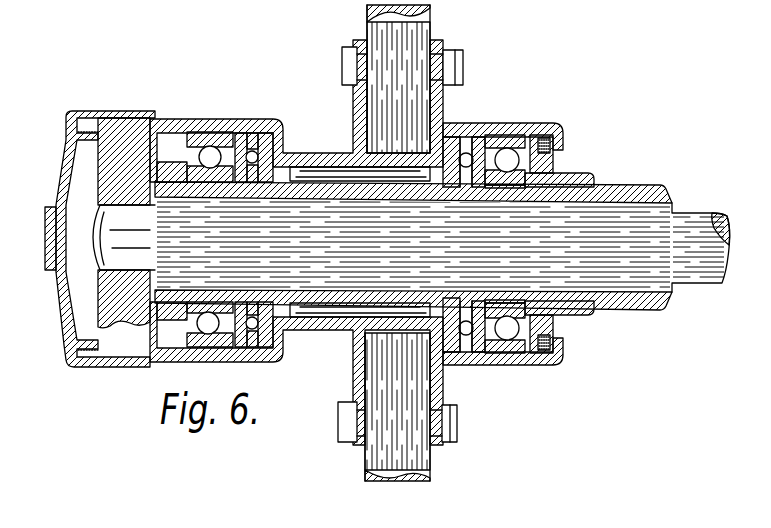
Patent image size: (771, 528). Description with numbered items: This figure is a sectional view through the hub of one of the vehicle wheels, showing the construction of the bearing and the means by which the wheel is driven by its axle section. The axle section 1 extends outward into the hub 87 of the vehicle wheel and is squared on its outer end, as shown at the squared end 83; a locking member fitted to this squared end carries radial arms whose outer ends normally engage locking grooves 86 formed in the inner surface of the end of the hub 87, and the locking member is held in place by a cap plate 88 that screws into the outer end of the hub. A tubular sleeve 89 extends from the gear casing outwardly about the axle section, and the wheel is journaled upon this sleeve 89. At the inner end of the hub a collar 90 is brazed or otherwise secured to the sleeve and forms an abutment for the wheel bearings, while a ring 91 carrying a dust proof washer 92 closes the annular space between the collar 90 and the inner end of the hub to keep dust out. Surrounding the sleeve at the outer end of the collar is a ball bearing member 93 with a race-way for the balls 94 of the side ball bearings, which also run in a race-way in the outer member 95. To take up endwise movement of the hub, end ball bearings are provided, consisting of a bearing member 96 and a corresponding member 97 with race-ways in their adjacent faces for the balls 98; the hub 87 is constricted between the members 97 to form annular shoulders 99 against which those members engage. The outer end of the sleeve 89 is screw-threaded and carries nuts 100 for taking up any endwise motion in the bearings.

The axle section 1 is at (322, 233).
The squared end 83 is at (135, 264).
The locking grooves 86 is at (92, 128).
The hub 87 is at (218, 121).
The cap plate 88 is at (62, 297).
The tubular sleeve 89 is at (628, 184).
The collar 90 is at (582, 172).
The ring 91 is at (553, 328).
The dust proof washer 92 is at (553, 142).
The ball bearing member 93 is at (505, 197).
The balls 94 is at (522, 312).
The outer member 95 is at (505, 366).
The bearing member 96 is at (470, 180).
The corresponding member 97 is at (272, 170).
The balls 98 is at (471, 150).
The annular shoulders 99 is at (288, 153).
The nuts 100 is at (180, 178).